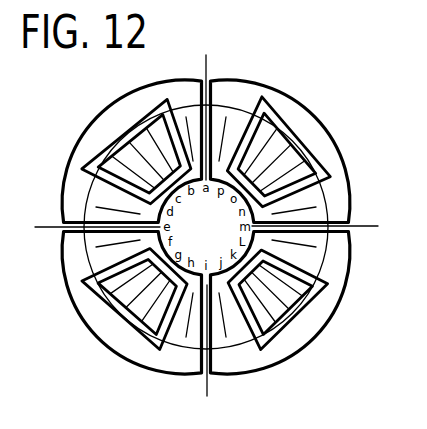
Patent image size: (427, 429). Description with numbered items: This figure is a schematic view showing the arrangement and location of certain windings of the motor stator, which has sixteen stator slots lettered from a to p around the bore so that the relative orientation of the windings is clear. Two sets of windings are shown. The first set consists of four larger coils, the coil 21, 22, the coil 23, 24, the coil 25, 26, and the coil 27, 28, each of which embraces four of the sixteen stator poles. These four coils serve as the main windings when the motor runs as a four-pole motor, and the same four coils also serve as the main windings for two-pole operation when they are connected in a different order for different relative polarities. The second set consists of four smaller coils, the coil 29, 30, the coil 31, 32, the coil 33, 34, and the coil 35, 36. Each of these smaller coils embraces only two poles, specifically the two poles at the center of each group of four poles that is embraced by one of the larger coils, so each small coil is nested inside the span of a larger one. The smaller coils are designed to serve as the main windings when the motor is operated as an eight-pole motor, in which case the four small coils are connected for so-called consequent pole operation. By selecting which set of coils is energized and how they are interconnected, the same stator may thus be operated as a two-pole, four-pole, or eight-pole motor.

The coil 21 is at (205, 107).
The coil 22 is at (84, 214).
The coil 23 is at (58, 227).
The coil 24 is at (197, 362).
The coil 25 is at (210, 349).
The coil 26 is at (328, 245).
The coil 27 is at (373, 222).
The coil 28 is at (224, 97).
The smaller coil 29 is at (172, 102).
The smaller coil 30 is at (95, 163).
The smaller coil 31 is at (95, 273).
The smaller coil 32 is at (153, 342).
The smaller coil 33 is at (254, 348).
The smaller coil 34 is at (320, 289).
The smaller coil 35 is at (326, 186).
The smaller coil 36 is at (267, 113).